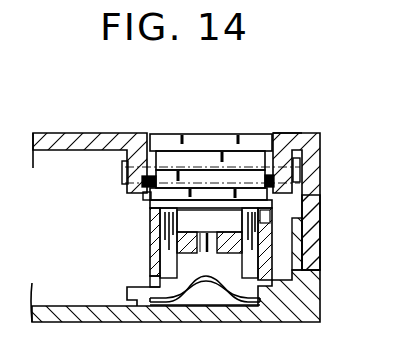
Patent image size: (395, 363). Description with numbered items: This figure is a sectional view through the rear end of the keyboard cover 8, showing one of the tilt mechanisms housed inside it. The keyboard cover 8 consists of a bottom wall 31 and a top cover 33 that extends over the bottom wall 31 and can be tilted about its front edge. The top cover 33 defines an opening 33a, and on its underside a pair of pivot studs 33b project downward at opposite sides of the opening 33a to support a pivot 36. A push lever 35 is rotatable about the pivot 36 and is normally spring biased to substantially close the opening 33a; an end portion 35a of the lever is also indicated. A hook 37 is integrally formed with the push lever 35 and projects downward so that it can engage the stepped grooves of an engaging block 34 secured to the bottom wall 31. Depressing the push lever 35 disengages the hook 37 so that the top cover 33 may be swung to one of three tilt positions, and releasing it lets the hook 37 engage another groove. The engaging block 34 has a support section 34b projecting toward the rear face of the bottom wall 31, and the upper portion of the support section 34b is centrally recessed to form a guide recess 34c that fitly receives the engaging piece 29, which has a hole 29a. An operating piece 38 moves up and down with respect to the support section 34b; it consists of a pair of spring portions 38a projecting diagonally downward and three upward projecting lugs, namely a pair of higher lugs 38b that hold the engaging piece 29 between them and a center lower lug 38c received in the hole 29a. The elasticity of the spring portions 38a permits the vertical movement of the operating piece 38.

The keyboard cover 8 is at (320, 133).
The engaging piece 29 is at (238, 238).
The hole 29a is at (189, 236).
The bottom wall 31 is at (319, 287).
The top cover 33 is at (313, 180).
The opening 33a is at (273, 133).
The pivot stud 33b is at (300, 175).
The engaging block 34 is at (310, 259).
The support section 34b is at (274, 233).
The guide recess 34c is at (205, 236).
The push lever 35 is at (193, 134).
The element end portion 35a is at (145, 197).
The pivot 36 is at (122, 166).
The hook 37 is at (150, 207).
The operating piece 38 is at (150, 265).
The spring portion 38a is at (259, 303).
The higher lug 38b is at (150, 230).
The lower lug 38c is at (150, 257).